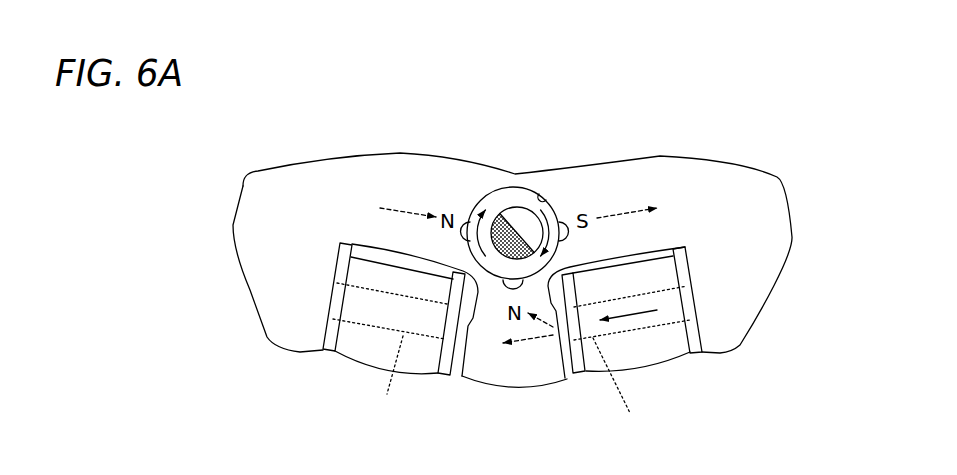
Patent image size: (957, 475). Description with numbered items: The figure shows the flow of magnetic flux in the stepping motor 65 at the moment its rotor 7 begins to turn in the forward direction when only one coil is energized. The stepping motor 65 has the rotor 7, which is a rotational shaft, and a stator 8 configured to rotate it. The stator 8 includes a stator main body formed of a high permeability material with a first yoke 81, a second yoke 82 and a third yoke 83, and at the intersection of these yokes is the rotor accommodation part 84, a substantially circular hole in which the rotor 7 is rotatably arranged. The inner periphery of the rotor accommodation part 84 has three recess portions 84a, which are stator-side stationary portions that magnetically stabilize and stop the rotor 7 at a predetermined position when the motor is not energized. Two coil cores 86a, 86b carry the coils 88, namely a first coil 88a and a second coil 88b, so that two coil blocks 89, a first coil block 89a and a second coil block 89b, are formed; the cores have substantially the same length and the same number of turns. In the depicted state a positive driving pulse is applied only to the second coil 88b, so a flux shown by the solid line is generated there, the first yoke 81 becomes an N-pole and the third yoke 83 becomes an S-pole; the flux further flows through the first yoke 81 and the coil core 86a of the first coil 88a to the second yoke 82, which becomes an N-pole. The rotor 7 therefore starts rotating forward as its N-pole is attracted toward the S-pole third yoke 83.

The rotor 7 is at (509, 202).
The stator 8 is at (243, 166).
The stepping motor 65 is at (818, 192).
The first yoke 81 is at (520, 365).
The second yoke 82 is at (373, 185).
The third yoke 83 is at (712, 200).
The rotor accommodation part 84 is at (544, 198).
The recess portions 84a is at (465, 227).
The coil core 86a is at (393, 379).
The coil core 86b is at (621, 390).
The coils 88 is at (515, 342).
The first coil 88a is at (359, 332).
The second coil 88b is at (669, 344).
The coil blocks 89 is at (518, 422).
The first coil block 89a is at (368, 373).
The second coil block 89b is at (655, 375).